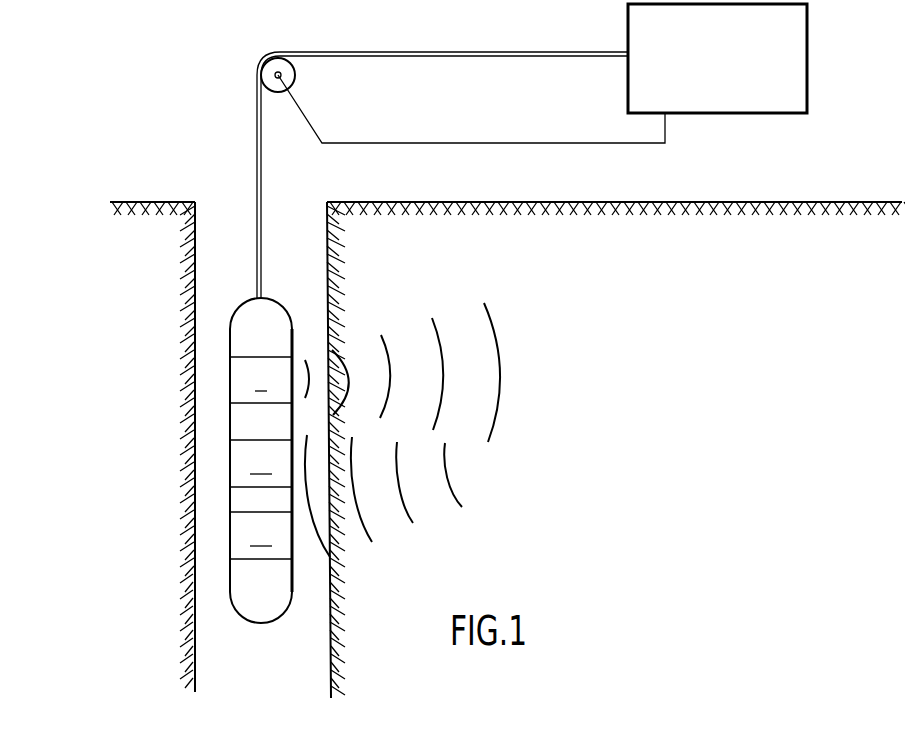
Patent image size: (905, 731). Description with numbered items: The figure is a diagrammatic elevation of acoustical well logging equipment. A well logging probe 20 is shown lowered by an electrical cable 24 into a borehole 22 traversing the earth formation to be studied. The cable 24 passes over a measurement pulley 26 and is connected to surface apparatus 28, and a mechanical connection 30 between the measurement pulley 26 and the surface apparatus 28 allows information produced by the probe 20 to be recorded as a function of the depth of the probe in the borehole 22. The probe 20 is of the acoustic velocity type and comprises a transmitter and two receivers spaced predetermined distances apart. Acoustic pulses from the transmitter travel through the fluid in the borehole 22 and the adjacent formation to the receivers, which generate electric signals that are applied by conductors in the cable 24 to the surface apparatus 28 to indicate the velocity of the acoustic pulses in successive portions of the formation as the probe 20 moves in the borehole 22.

The well logging probe 20 is at (289, 305).
The borehole 22 is at (197, 233).
The electrical cable 24 is at (255, 154).
The measurement pulley 26 is at (296, 77).
The surface apparatus 28 is at (809, 38).
The mechanical connection 30 is at (454, 140).